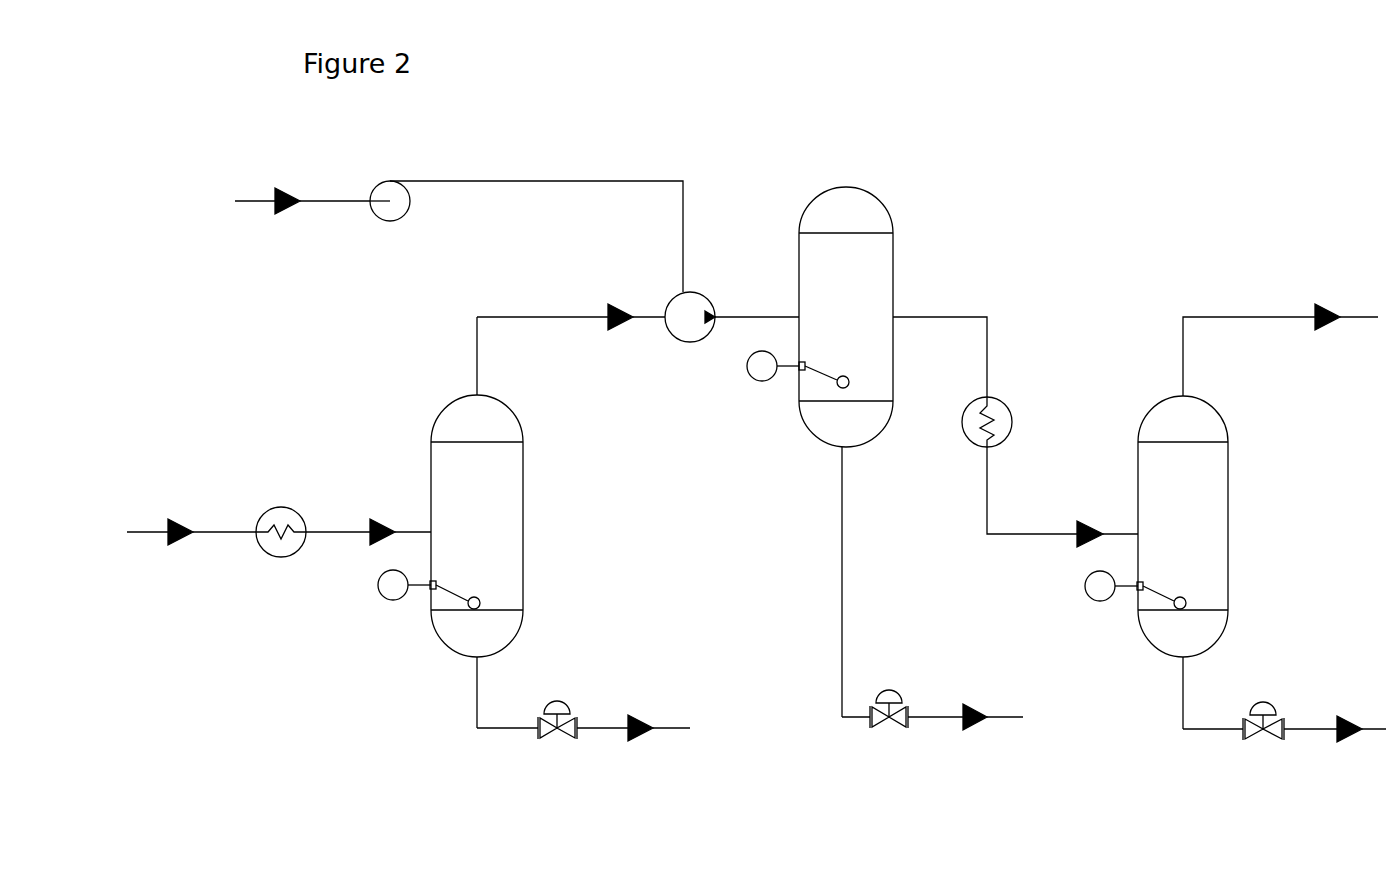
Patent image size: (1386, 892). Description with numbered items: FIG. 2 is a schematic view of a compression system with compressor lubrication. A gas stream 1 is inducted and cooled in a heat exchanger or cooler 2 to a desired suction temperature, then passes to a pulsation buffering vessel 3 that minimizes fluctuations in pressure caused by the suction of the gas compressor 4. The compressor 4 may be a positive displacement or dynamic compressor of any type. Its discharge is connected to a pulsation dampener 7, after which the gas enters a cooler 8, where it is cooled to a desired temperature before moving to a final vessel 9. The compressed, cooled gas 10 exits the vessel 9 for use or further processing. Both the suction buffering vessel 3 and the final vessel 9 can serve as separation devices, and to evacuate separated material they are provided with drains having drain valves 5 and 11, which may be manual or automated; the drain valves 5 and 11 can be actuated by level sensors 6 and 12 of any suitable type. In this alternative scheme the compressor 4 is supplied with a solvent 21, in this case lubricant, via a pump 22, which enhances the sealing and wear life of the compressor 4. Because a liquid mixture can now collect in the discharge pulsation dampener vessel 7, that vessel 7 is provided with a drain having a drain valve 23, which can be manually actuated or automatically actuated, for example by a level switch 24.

The gas stream 1 is at (173, 553).
The heat exchanger or cooler 2 is at (341, 511).
The pulsation buffering vessel 3 is at (498, 522).
The gas compressor 4 is at (638, 299).
The drain valve 5 is at (583, 745).
The level sensor 6 is at (417, 601).
The pulsation dampener 7 is at (863, 452).
The cooler 8 is at (1015, 432).
The final vessel 9 is at (1202, 562).
The compressed, cooled gas 10 is at (1280, 321).
The drain valve 11 is at (1284, 744).
The level sensor 12 is at (1125, 613).
The solvent 21 is at (293, 232).
The pump 22 is at (526, 212).
The drain valve 23 is at (932, 732).
The level switch 24 is at (790, 388).